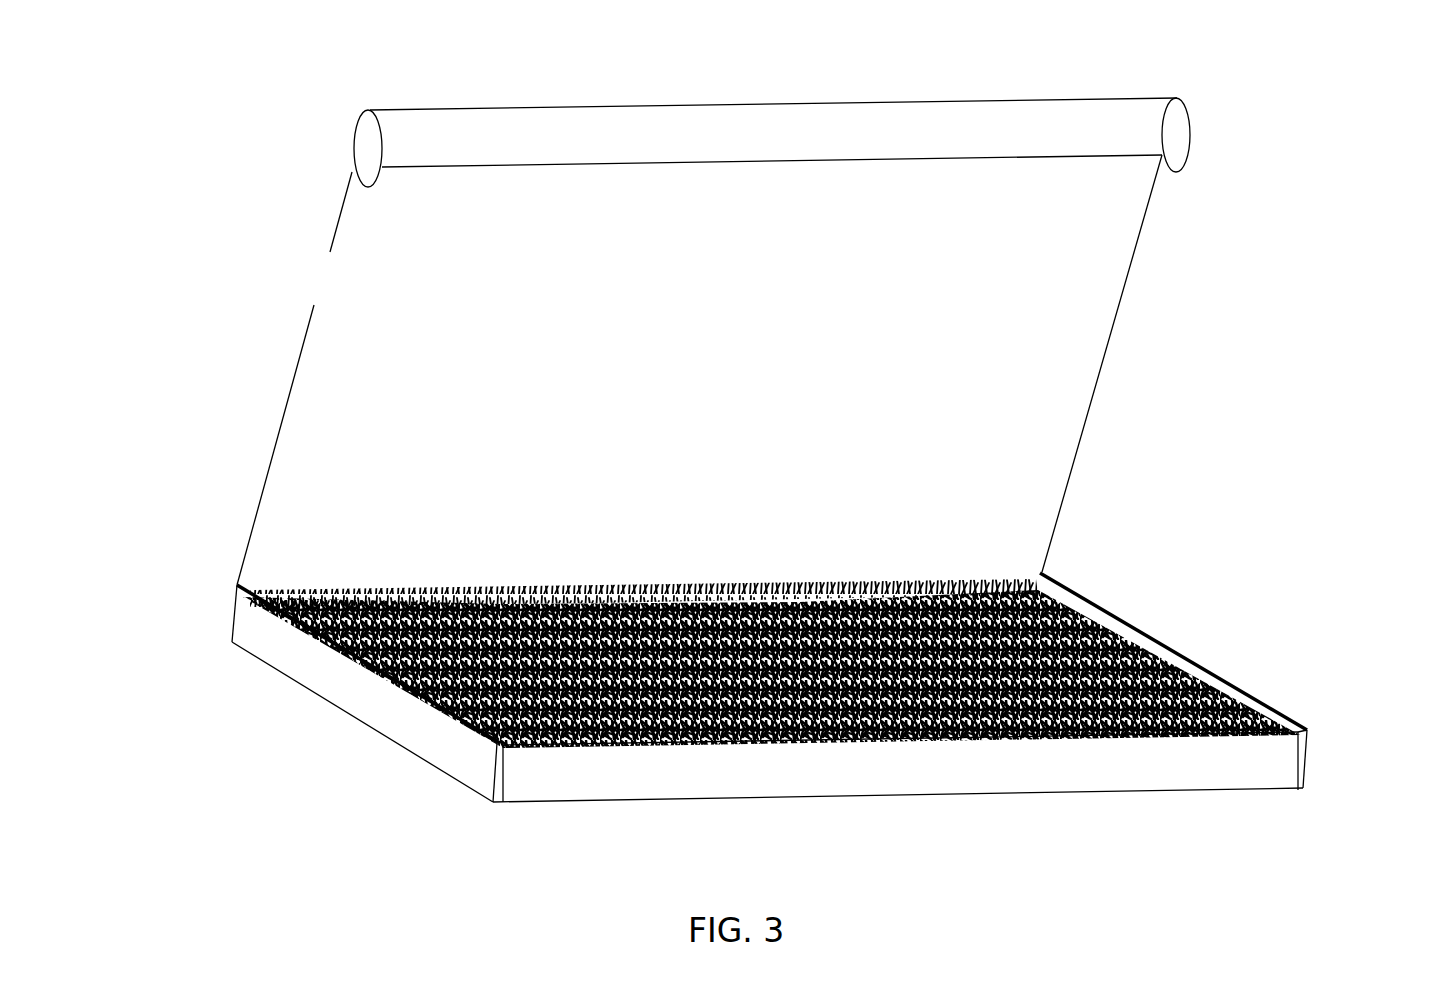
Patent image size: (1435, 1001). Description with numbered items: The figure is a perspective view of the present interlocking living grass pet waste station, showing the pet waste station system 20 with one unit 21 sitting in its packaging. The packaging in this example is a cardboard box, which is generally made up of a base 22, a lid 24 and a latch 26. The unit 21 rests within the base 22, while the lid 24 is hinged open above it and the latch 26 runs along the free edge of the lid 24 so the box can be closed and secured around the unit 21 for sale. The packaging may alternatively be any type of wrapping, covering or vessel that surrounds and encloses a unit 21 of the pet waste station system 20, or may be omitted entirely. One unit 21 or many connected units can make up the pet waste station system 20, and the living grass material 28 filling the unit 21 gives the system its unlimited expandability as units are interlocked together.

The pet waste station system 20 is at (440, 490).
The unit 21 is at (1140, 645).
The base 22 is at (1147, 762).
The lid 24 is at (1070, 359).
The latch 26 is at (955, 123).
The turf fibers 28 is at (353, 657).